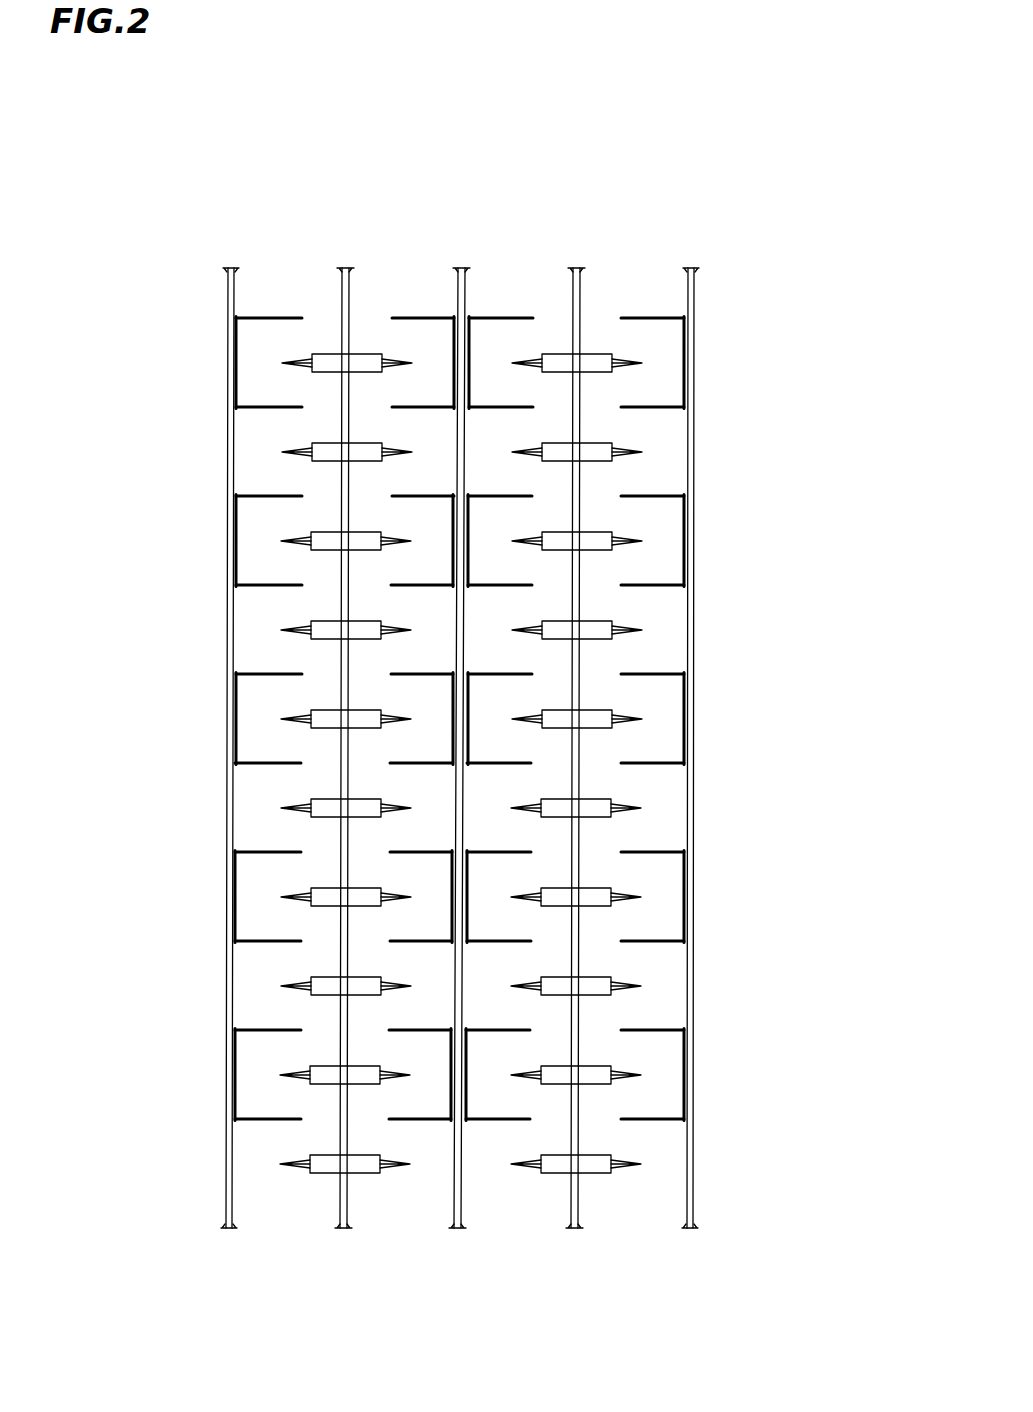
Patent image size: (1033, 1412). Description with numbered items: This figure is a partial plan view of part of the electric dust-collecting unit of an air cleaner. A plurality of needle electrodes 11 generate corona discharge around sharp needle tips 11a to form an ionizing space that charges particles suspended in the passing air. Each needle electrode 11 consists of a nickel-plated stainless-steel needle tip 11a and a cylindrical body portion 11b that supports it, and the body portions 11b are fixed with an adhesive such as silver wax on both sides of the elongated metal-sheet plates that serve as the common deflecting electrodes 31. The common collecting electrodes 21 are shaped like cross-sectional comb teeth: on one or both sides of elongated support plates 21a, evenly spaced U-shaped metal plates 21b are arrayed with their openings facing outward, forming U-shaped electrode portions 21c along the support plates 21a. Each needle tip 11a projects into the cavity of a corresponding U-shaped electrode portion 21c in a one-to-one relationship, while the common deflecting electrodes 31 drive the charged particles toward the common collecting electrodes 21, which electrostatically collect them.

The needle electrode 11 is at (574, 641).
The needle tip 11a is at (393, 357).
The cylindrical body portion 11b is at (372, 357).
The common collecting electrode 21 is at (472, 780).
The support plate 21a is at (695, 697).
The U-shaped metal plate 21b is at (657, 760).
The U-shaped electrode portion 21c is at (249, 612).
The common deflecting electrode 31 is at (338, 1200).